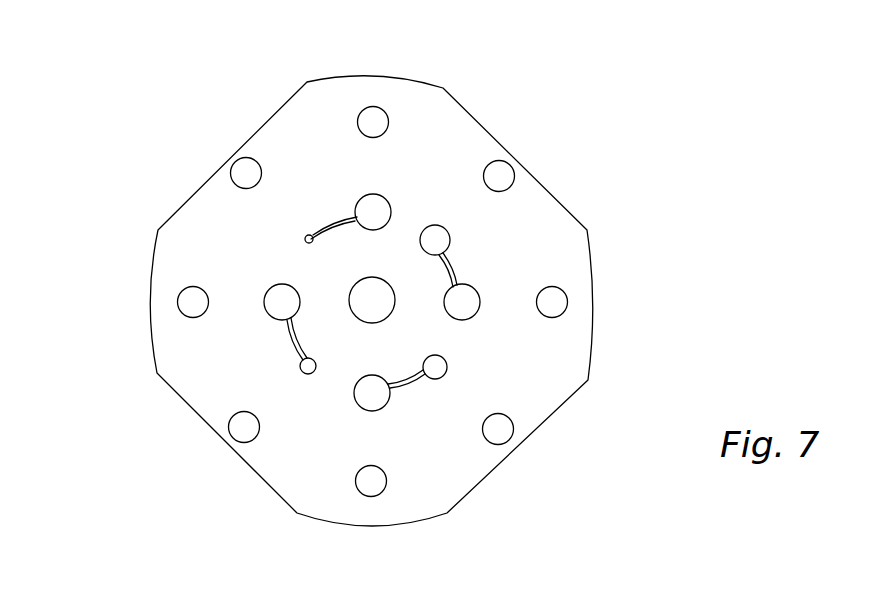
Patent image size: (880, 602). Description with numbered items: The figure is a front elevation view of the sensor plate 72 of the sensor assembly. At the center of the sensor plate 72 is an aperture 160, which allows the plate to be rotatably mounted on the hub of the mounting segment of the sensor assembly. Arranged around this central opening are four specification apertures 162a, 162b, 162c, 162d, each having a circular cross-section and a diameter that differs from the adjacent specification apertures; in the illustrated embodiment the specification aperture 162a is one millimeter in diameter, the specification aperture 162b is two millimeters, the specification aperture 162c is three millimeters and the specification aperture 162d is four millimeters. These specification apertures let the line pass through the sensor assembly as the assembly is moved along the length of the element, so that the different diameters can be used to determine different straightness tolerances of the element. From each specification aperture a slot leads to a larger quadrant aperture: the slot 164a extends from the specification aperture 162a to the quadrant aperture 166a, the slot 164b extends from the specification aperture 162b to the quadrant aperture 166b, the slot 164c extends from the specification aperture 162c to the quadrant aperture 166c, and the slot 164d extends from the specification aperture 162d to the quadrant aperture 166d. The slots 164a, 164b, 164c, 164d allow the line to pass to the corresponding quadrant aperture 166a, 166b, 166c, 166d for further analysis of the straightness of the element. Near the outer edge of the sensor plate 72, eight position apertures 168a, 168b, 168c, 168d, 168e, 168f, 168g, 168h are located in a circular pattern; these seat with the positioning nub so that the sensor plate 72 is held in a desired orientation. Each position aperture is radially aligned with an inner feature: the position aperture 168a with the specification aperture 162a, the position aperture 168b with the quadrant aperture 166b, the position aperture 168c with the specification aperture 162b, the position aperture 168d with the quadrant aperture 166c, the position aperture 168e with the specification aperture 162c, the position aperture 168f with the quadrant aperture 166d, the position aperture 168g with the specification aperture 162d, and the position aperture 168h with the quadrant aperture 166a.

The sensor plate 72 is at (79, 67).
The aperture 160 is at (364, 282).
The specification aperture 162a is at (303, 240).
The specification aperture 162b is at (312, 375).
The specification aperture 162c is at (426, 358).
The specification aperture 162d is at (423, 231).
The slot 164a is at (346, 212).
The slot 164b is at (286, 340).
The slot 164c is at (421, 392).
The slot 164d is at (473, 270).
The quadrant aperture 166a is at (380, 195).
The quadrant aperture 166b is at (270, 286).
The quadrant aperture 166c is at (360, 410).
The quadrant aperture 166d is at (475, 317).
The position aperture 168a is at (238, 158).
The position aperture 168b is at (178, 300).
The position aperture 168c is at (240, 440).
The position aperture 168d is at (370, 497).
The position aperture 168e is at (507, 440).
The position aperture 168f is at (568, 304).
The position aperture 168g is at (512, 166).
The position aperture 168h is at (377, 106).